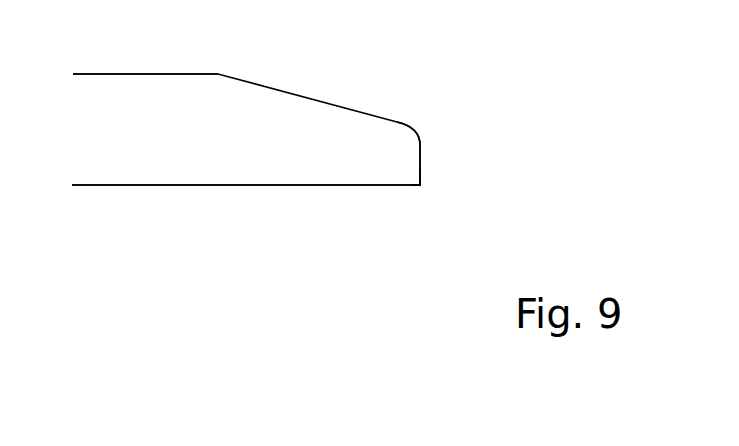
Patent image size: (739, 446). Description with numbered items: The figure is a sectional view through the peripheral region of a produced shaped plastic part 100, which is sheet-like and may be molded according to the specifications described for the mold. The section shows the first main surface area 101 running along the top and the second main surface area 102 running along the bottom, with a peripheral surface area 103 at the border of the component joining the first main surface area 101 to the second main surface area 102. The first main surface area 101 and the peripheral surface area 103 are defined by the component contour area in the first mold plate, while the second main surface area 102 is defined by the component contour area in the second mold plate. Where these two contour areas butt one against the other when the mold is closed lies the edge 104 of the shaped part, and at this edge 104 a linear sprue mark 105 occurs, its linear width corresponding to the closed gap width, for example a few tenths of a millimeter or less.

The shaped plastic part 100 is at (258, 68).
The first main surface area 101 is at (157, 73).
The second main surface area 102 is at (309, 187).
The peripheral surface area 103 is at (421, 150).
The edge of the shaped part 104 is at (418, 185).
The linear sprue mark 105 is at (421, 180).